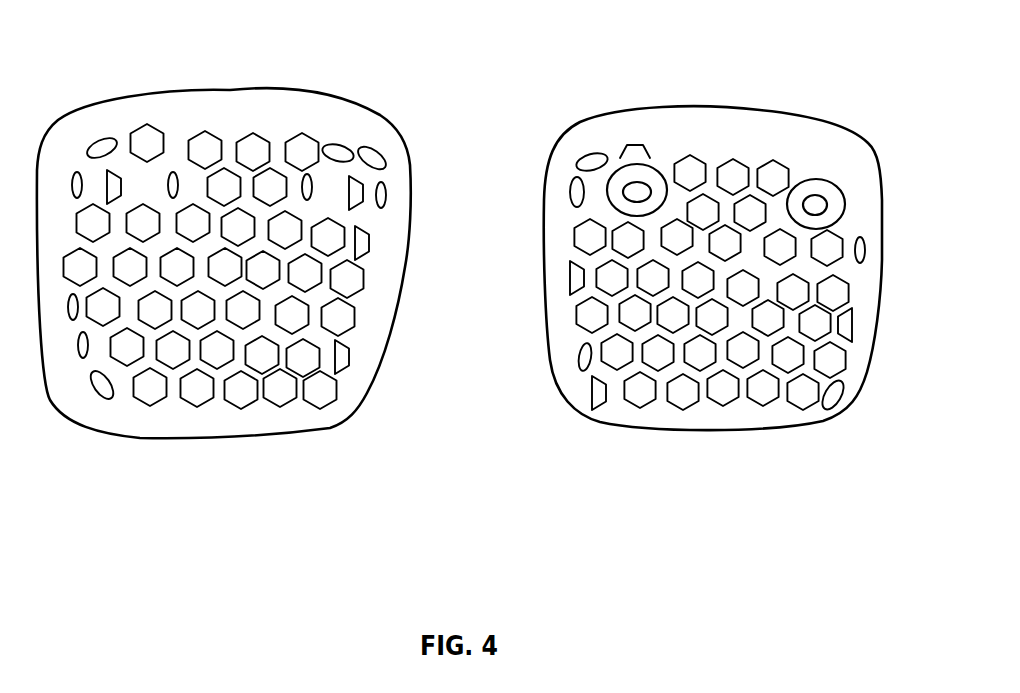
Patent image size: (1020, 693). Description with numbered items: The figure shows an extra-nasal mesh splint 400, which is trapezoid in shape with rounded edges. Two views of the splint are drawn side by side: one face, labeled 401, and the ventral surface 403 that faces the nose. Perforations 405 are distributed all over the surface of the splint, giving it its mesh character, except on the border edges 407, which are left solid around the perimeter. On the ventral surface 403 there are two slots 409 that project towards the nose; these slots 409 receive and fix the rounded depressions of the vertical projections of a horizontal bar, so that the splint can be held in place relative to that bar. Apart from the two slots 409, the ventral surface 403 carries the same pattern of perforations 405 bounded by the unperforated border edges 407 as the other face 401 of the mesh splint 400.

The extra-nasal mesh splint 400 is at (352, 80).
The first pad 401 is at (168, 458).
The ventral surface 403 is at (670, 445).
The perforations 405 is at (848, 360).
The border edges 407 is at (853, 153).
The slots 409 is at (603, 181).